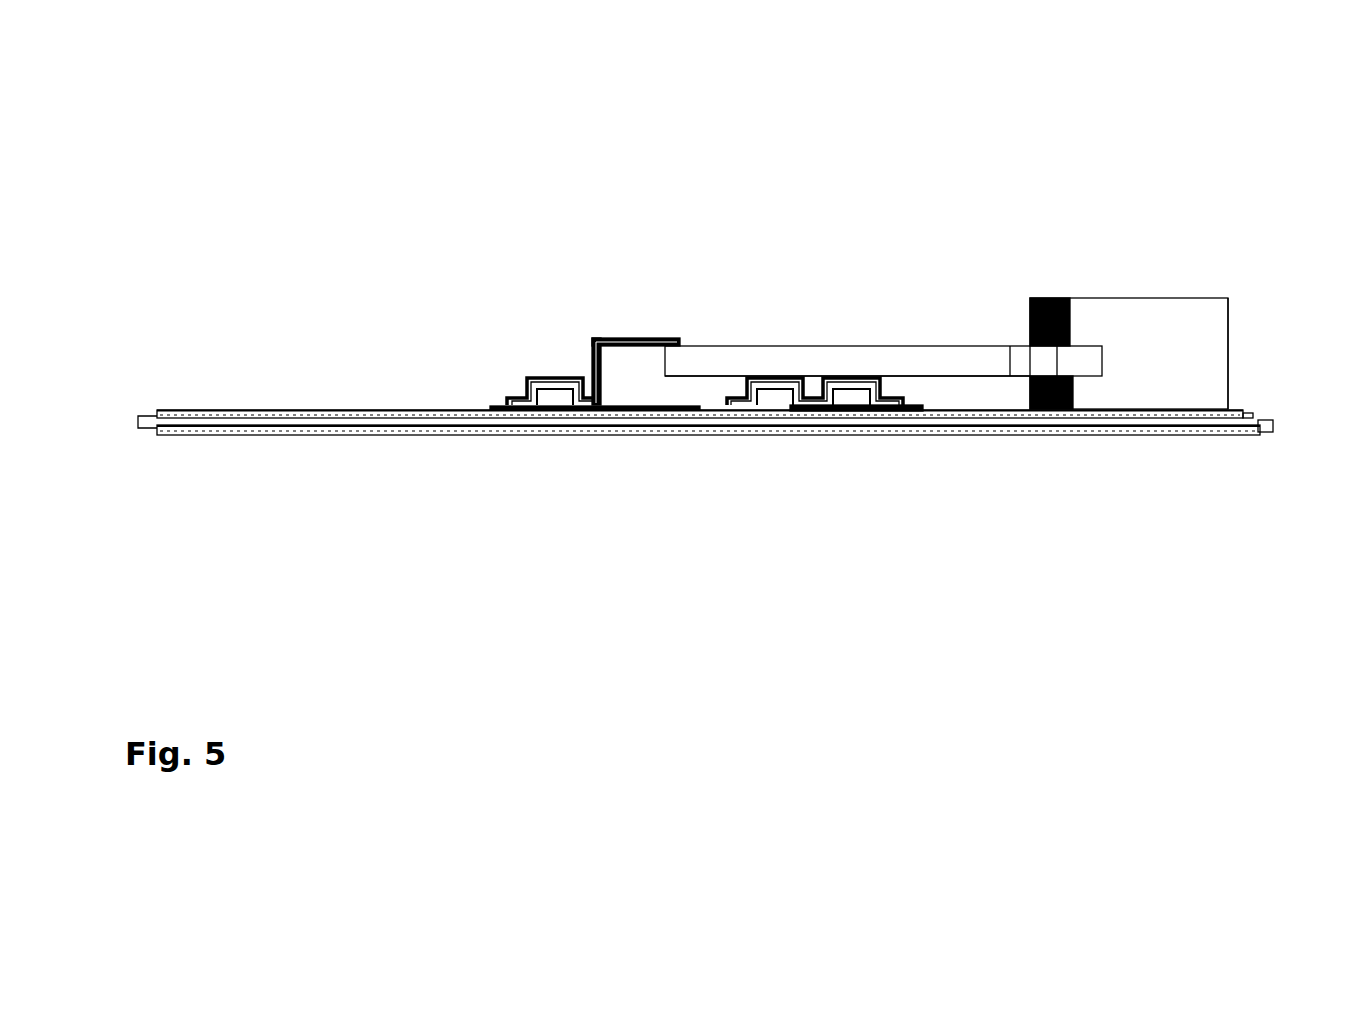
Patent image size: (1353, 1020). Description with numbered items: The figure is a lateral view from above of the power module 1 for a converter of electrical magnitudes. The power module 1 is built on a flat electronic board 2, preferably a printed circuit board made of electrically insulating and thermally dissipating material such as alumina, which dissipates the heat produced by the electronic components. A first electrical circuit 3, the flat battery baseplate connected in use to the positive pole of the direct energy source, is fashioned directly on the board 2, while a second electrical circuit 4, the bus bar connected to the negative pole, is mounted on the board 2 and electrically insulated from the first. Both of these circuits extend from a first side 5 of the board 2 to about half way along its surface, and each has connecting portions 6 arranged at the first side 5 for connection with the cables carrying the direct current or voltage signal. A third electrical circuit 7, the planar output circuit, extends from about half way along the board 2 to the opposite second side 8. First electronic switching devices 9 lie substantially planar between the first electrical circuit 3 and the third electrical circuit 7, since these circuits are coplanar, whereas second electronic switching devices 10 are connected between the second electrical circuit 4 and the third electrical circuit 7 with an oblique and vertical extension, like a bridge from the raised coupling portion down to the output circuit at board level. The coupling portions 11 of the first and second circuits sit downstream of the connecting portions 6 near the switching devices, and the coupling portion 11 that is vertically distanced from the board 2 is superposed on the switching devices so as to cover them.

The power module 1 is at (263, 183).
The flat electronic board 2 is at (1273, 423).
The first electrical circuit 3 is at (1248, 408).
The second electrical circuit 4 is at (1232, 338).
The first side 5 is at (1282, 415).
The connecting portions 6 is at (1123, 320).
The third electrical circuit 7 is at (290, 410).
The second side 8 is at (135, 420).
The first electronic switching devices 9 is at (910, 387).
The second electronic switching devices 10 is at (570, 348).
The coupling portions 11 is at (958, 378).